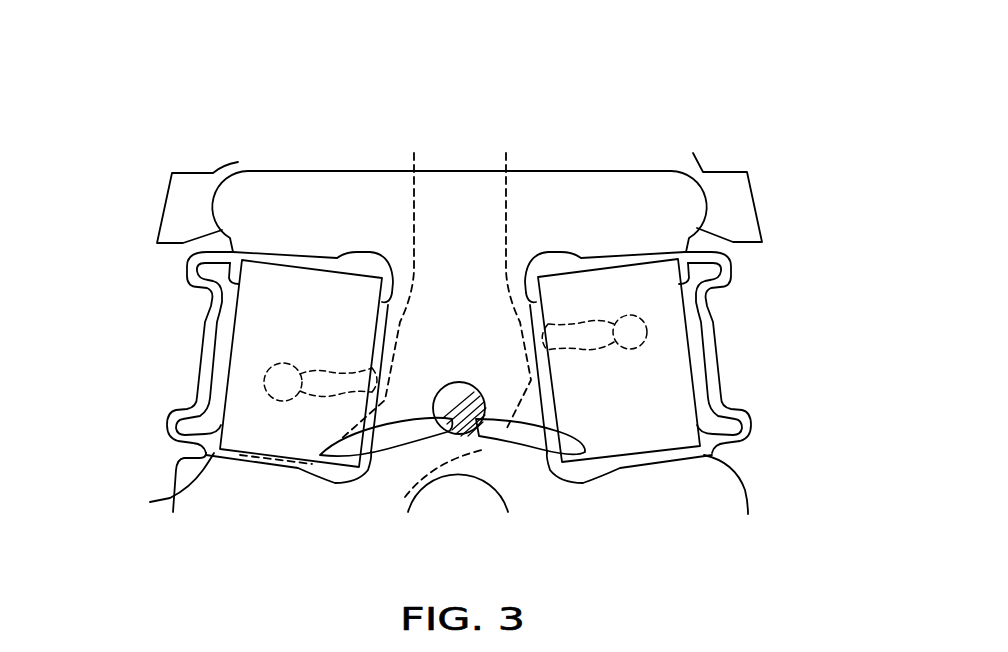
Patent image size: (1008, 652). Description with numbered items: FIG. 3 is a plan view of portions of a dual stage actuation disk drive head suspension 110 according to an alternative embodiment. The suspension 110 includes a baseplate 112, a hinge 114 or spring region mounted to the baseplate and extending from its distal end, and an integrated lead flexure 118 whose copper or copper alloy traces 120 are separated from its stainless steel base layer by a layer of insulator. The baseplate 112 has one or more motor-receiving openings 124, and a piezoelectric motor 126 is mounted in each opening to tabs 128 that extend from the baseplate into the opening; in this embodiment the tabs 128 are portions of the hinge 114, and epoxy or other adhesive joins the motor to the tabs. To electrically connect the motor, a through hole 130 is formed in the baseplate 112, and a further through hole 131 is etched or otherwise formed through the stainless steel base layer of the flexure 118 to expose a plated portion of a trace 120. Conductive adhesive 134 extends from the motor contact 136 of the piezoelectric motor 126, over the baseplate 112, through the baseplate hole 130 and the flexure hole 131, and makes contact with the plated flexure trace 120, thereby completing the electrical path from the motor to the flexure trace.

The suspension 110 is at (722, 147).
The baseplate 112 is at (305, 185).
The hinge 114 is at (238, 162).
The flexure 118 is at (486, 230).
The trace 120 is at (462, 384).
The motor-receiving opening 124 is at (217, 388).
The piezoelectric motor 126 is at (656, 390).
The tab 128 is at (653, 258).
The through hole 130 is at (442, 400).
The through hole 131 is at (455, 385).
The conductive adhesive 134 is at (352, 459).
The motor contact 136 is at (352, 440).